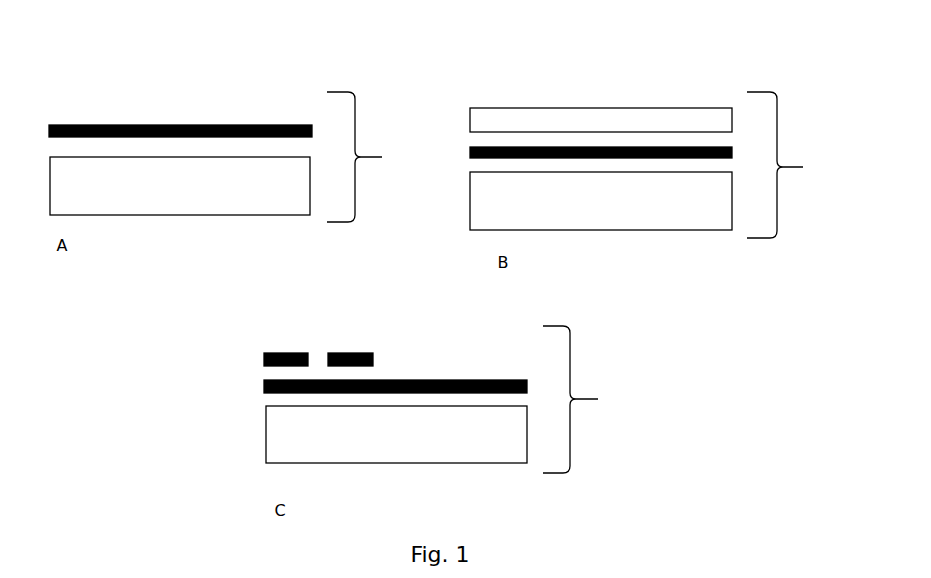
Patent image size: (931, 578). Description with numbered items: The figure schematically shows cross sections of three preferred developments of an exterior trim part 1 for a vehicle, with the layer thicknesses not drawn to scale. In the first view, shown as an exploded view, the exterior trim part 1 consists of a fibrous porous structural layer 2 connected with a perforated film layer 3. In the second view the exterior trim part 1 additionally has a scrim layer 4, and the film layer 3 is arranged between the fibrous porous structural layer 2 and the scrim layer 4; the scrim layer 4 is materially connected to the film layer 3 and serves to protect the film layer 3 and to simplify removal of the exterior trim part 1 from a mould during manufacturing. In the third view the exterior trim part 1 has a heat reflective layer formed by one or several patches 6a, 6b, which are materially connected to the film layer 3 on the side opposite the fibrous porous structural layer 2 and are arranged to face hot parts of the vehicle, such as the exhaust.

In FIG. 1a, the exterior trim part 1 is at (367, 157).
In FIG. 1b, the exterior trim part 1 is at (787, 165).
In FIG. 1c, the exterior trim part 1 is at (582, 399).
In FIG. 1a, the fibrous porous structural layer 2 is at (180, 186).
In FIG. 1b, the fibrous porous structural layer 2 is at (601, 201).
In FIG. 1c, the fibrous porous structural layer 2 is at (396, 434).
In FIG. 1a, the film layer 3 is at (180, 125).
In FIG. 1b, the film layer 3 is at (470, 148).
In FIG. 1c, the film layer 3 is at (264, 382).
In FIG. 1b, the scrim layer 4 is at (601, 120).
In FIG. 1c, the patch 6a is at (292, 353).
In FIG. 1c, the patch 6b is at (360, 353).